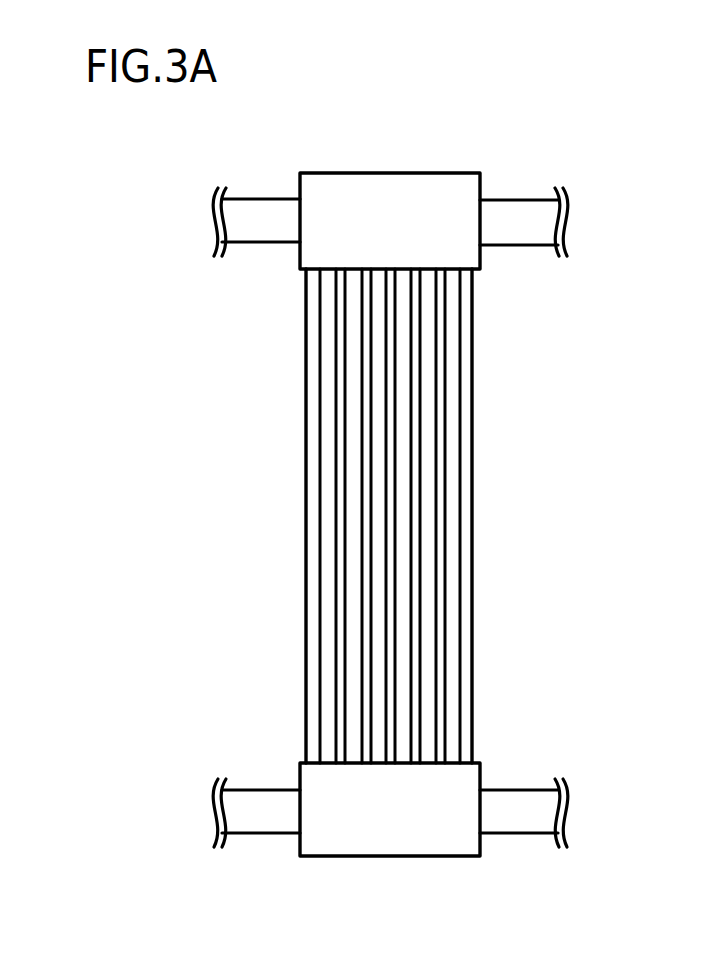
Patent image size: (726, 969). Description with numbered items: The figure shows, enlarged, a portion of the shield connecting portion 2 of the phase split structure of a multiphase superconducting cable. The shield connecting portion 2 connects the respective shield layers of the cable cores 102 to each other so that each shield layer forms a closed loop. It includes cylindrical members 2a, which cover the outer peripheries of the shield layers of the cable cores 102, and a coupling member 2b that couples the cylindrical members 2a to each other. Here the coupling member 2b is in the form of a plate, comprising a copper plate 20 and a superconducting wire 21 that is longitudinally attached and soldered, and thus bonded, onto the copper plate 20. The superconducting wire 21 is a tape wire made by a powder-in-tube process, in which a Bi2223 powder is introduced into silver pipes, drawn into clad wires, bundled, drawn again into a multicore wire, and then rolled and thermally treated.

The shield connecting portion 2 is at (485, 514).
The cylindrical member 2a is at (481, 266).
The coupling member 2b is at (462, 516).
The copper plate 20 is at (473, 417).
The superconducting wire 21 is at (452, 500).
The cable core 102 is at (515, 200).